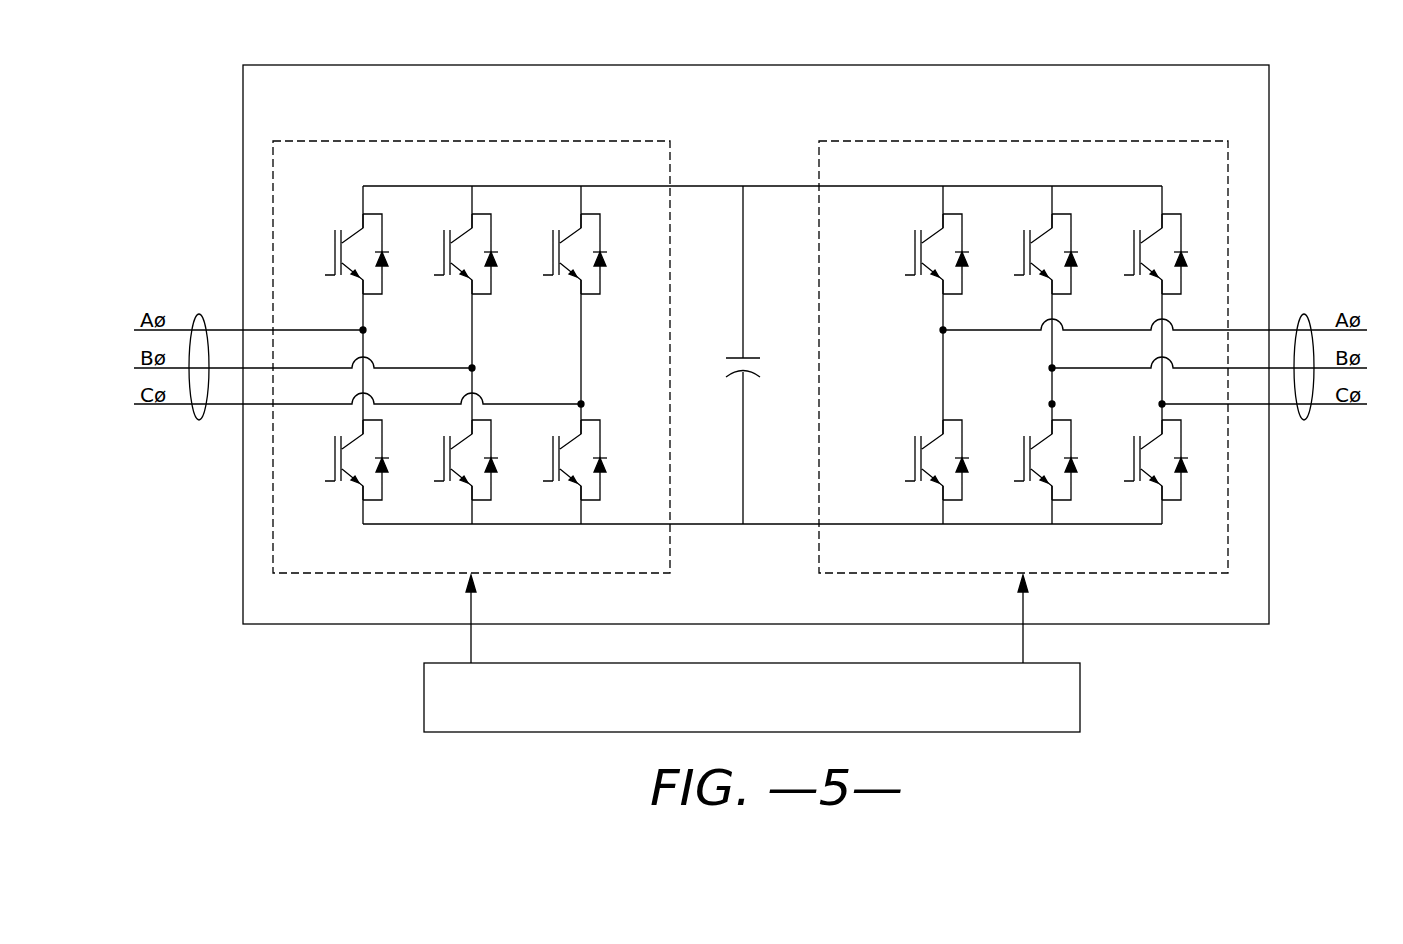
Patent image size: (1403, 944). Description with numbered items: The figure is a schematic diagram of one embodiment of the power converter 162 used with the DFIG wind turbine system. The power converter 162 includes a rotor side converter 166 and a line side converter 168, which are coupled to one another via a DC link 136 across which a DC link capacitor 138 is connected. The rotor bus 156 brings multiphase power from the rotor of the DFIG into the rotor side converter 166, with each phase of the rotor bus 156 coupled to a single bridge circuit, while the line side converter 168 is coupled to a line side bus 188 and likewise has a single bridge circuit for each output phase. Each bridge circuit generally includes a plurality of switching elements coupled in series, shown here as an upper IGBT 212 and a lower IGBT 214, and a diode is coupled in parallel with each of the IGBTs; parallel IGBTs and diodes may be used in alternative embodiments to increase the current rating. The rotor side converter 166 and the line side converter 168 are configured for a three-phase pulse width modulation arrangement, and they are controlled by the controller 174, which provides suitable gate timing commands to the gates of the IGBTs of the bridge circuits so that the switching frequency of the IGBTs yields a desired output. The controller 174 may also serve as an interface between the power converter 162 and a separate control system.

The power converter 162 is at (847, 65).
The line side converter 168 is at (476, 141).
The rotor side converter 166 is at (1120, 140).
The DC link 136 is at (705, 186).
The DC link capacitor 138 is at (750, 360).
The upper IGBT 212 is at (913, 250).
The lower IGBT 214 is at (915, 460).
The line side bus 188 is at (199, 314).
The rotor bus 156 is at (1304, 314).
The controller 174 is at (1080, 703).